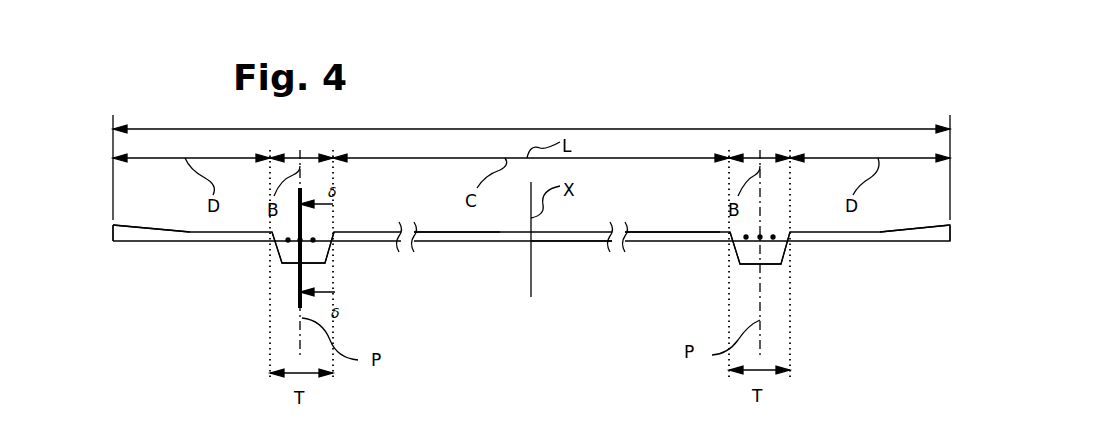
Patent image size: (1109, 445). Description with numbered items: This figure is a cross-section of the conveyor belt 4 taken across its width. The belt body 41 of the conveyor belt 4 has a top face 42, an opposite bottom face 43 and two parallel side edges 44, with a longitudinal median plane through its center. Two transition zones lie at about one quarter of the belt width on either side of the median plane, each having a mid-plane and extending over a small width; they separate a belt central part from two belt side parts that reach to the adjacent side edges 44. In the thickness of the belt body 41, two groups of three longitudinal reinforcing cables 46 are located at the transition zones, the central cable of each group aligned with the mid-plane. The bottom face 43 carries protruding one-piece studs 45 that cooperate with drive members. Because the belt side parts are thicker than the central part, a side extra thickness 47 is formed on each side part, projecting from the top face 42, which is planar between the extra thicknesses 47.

The conveyor belt 4 is at (658, 252).
The belt body 41 is at (457, 232).
The top face 42 is at (690, 215).
The bottom face 43 is at (560, 258).
The side edges 44 is at (125, 262).
The studs 45 is at (276, 262).
The reinforcing cables 46 is at (290, 243).
The side extra thickness 47 is at (122, 200).